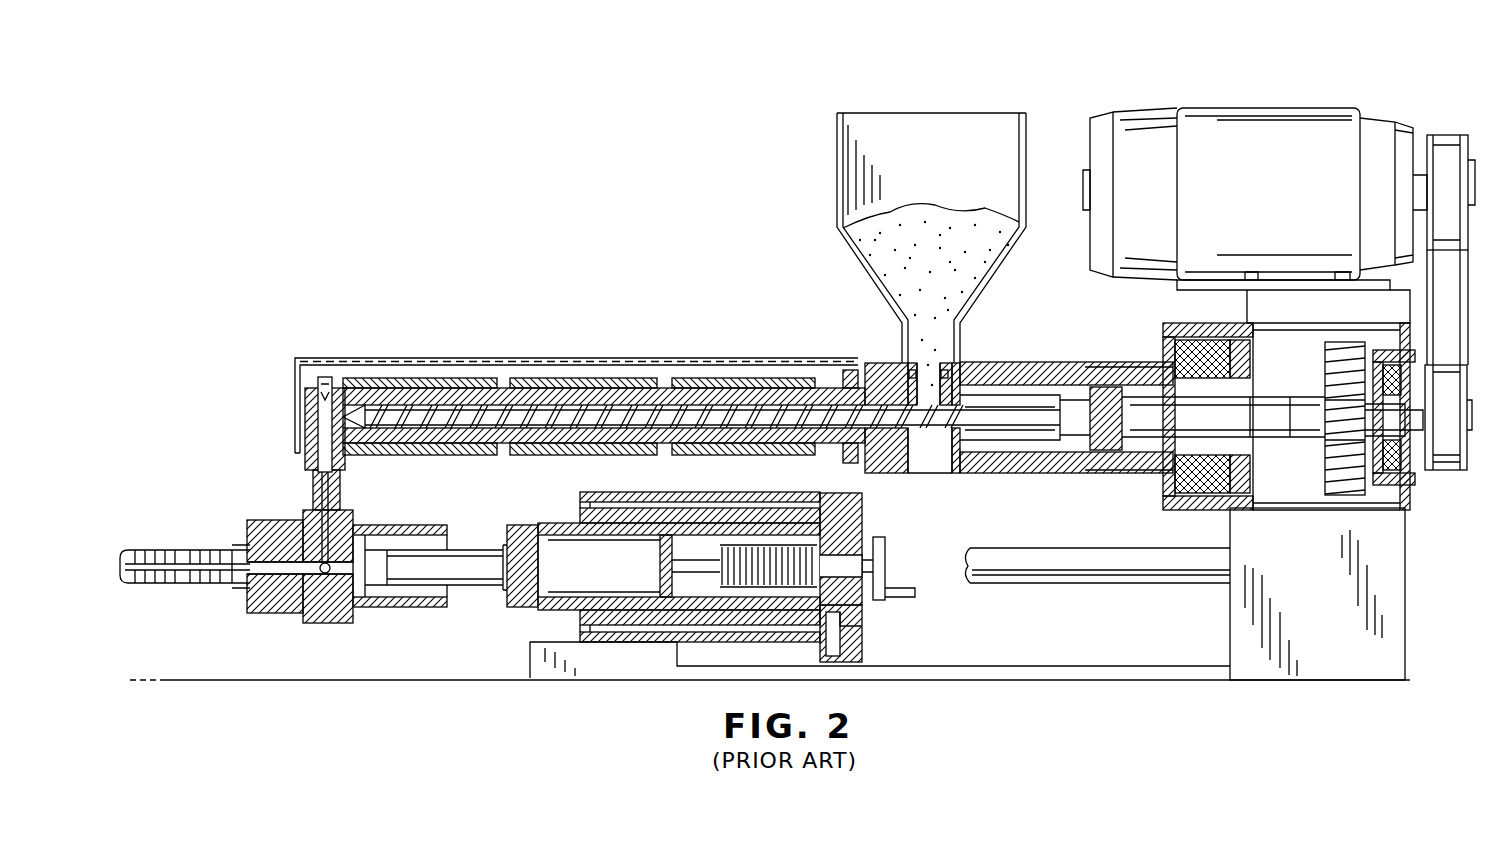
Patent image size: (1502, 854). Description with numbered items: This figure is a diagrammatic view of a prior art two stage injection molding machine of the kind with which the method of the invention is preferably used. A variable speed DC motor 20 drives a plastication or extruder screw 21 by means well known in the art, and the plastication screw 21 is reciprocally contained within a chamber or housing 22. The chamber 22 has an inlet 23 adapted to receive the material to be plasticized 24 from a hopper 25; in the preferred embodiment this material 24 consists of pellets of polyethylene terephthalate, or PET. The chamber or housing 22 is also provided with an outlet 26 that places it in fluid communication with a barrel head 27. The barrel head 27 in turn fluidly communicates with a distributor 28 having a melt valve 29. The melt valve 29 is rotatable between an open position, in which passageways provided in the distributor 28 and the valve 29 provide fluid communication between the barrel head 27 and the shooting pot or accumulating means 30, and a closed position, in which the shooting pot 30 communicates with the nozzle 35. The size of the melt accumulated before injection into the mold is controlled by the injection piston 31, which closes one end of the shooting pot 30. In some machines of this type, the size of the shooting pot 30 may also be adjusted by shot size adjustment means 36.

The variable speed DC motor 20 is at (1197, 115).
The plastication screw 21 is at (612, 413).
The chamber 22 is at (530, 407).
The inlet 23 is at (905, 368).
The material to be plasticized 24 is at (892, 257).
The hopper 25 is at (843, 160).
The outlet 26 is at (300, 440).
The barrel head 27 is at (335, 410).
The distributor 28 is at (250, 542).
The melt valve 29 is at (318, 562).
The shooting pot 30 is at (368, 578).
The injection piston 31 is at (447, 598).
The nozzle 35 is at (136, 583).
The shot size adjustment means 36 is at (885, 558).